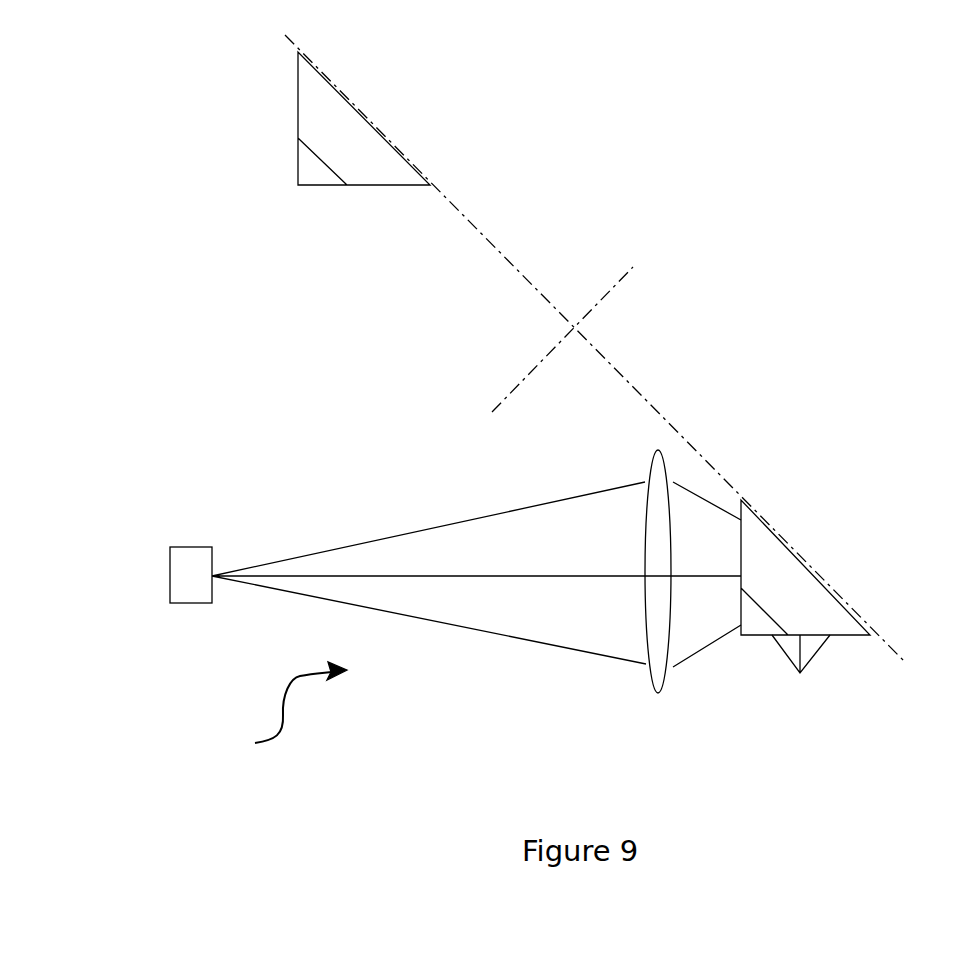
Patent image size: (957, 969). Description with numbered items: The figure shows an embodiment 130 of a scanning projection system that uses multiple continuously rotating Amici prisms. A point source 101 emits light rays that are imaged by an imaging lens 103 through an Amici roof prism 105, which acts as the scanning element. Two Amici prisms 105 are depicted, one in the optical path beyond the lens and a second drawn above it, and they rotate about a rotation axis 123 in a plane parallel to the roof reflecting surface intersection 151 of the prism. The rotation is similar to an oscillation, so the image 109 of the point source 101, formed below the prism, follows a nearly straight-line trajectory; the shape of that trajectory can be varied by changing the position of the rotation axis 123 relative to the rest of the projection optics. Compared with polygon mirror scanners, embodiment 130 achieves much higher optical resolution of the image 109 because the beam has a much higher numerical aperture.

The point source 101 is at (170, 560).
The imaging lens 103 is at (663, 472).
The Amici roof prism 105 is at (367, 117).
The image of point source 109 is at (800, 672).
The rotation axis 123 is at (633, 267).
The embodiment 130 is at (269, 715).
The roof reflecting surface intersection 151 is at (837, 592).